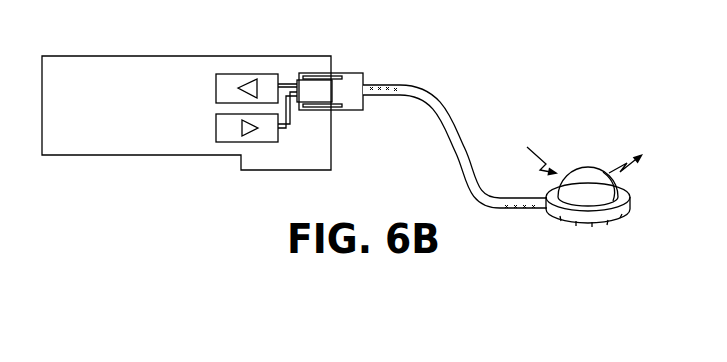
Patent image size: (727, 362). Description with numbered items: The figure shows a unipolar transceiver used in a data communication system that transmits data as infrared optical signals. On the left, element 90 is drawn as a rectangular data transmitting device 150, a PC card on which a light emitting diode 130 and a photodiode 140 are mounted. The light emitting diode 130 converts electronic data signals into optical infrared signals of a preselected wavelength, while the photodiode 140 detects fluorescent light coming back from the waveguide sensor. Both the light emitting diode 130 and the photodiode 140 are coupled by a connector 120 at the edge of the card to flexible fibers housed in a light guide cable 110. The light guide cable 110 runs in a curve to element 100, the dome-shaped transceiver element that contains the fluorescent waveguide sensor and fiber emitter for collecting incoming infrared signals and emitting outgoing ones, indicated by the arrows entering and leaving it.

The element 90 is at (112, 42).
The element 100 is at (585, 176).
The light guide cable 110 is at (460, 121).
The connector 120 is at (353, 76).
The light emitting diode 130 is at (226, 78).
The photodiode 140 is at (225, 135).
The data transmitting device 150 is at (110, 142).